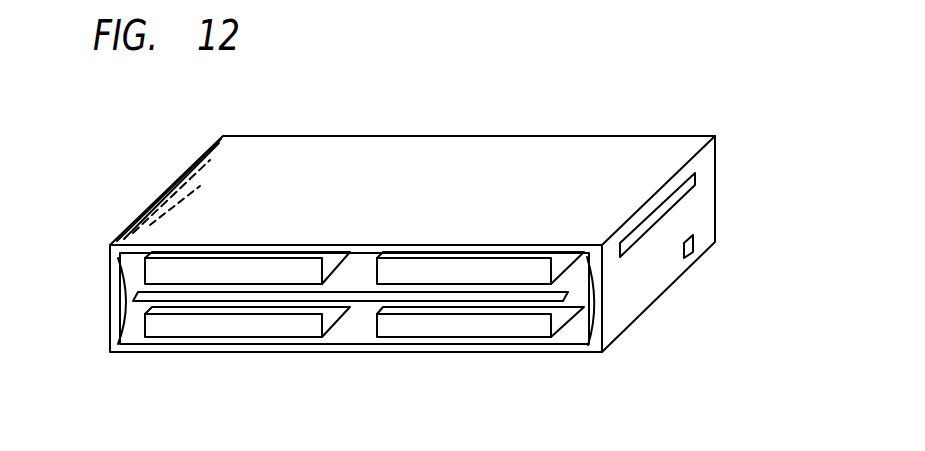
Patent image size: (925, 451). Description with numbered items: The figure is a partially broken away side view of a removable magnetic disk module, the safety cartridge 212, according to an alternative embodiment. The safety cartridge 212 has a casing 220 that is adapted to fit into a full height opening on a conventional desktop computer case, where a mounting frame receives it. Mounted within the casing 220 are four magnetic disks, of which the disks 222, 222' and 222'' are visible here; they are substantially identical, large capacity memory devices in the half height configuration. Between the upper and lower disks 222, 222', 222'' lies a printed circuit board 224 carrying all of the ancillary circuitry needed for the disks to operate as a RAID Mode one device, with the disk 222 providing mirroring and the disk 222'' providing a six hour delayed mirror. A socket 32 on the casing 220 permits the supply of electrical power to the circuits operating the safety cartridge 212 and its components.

The casing 220 is at (400, 196).
The safety cartridge 212 is at (687, 192).
The second socket 32 is at (694, 245).
The magnetic disk 222 is at (203, 288).
The magnetic disk 222' is at (547, 307).
The magnetic disk 222'' is at (385, 355).
The printed circuit board 224 is at (355, 298).